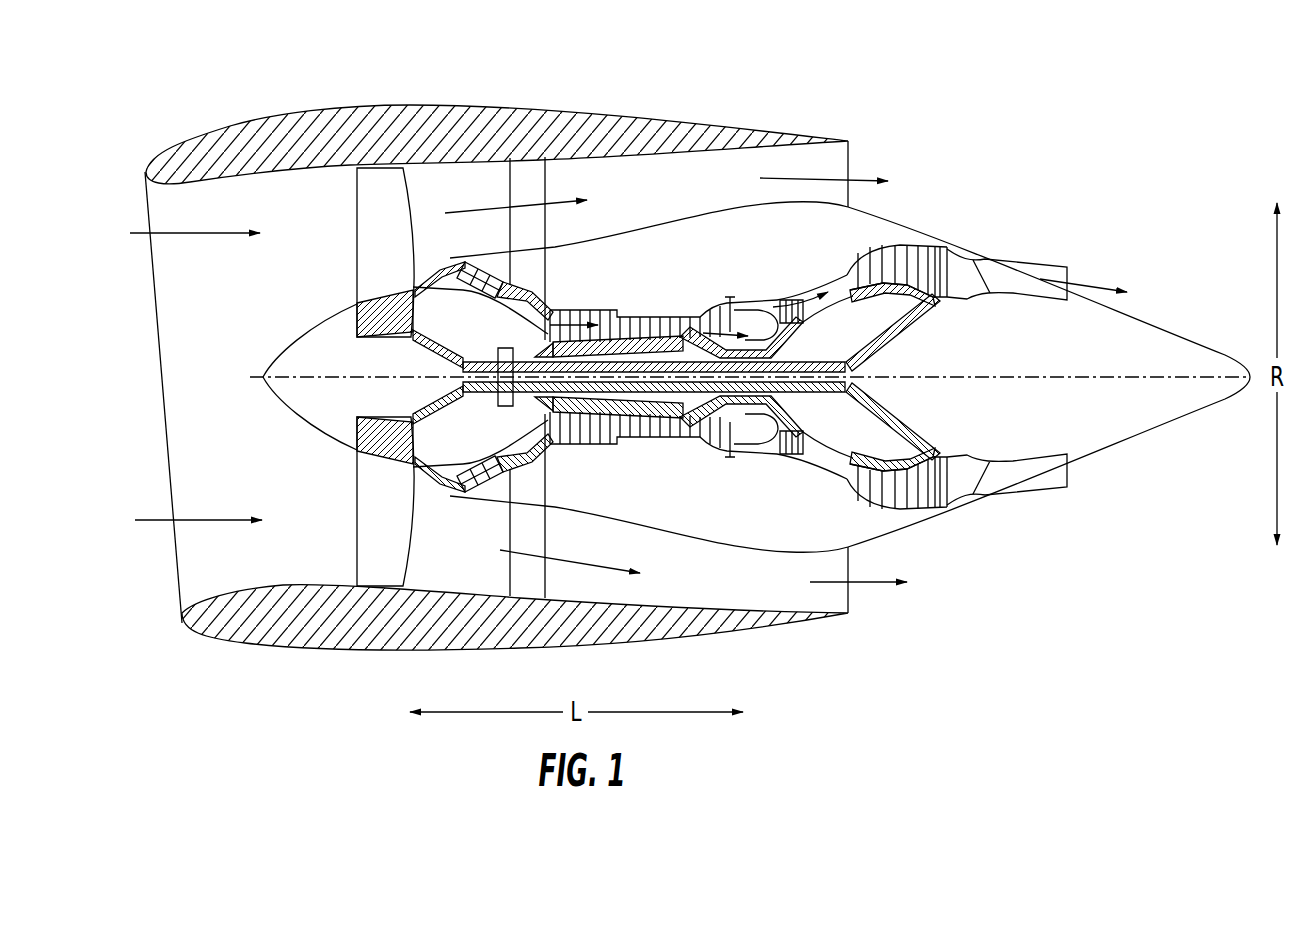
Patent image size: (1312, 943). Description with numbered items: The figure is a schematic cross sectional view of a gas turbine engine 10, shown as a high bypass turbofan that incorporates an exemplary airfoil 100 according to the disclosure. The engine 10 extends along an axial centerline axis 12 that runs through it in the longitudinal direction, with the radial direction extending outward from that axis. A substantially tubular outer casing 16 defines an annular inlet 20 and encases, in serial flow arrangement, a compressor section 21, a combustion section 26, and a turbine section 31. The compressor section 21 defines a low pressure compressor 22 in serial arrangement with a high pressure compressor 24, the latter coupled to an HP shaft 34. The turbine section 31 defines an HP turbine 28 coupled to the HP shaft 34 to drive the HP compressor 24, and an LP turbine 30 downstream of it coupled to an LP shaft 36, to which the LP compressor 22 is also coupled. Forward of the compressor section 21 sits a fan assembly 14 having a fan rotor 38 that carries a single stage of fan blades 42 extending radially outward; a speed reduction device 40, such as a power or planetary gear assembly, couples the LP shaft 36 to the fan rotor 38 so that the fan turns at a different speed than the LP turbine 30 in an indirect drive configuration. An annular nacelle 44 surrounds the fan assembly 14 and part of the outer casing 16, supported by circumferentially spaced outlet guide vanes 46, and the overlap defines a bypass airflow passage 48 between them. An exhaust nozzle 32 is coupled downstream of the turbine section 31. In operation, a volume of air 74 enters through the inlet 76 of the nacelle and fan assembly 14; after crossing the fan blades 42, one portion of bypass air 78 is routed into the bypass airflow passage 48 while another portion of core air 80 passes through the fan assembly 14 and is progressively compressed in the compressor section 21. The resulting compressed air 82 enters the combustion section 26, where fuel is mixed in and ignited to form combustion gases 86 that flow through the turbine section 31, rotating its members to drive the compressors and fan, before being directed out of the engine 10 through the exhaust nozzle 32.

The gas turbine engine 10 is at (988, 126).
The axial centerline axis 12 is at (1015, 376).
The fan assembly 14 is at (433, 178).
The outer casing 16 is at (740, 205).
The annular inlet 20 is at (447, 485).
The compressor section 21 is at (608, 284).
The low pressure compressor 22 is at (507, 452).
The high pressure compressor 24 is at (578, 435).
The combustion section 26 is at (750, 432).
The HP turbine 28 is at (807, 448).
The LP turbine 30 is at (932, 516).
The turbine section 31 is at (886, 240).
The exhaust nozzle 32 is at (997, 490).
The HP shaft 34 is at (790, 343).
The LP shaft 36 is at (890, 313).
The fan rotor 38 is at (410, 340).
The speed reduction device 40 is at (503, 345).
The fan blades 42 is at (375, 205).
The nacelle 44 is at (360, 106).
The outlet guide vanes 46 is at (533, 190).
The bypass airflow passage 48 is at (648, 199).
The air 74 is at (180, 235).
The inlet 76 is at (245, 540).
The bypass air 78 is at (497, 203).
The core air 80 is at (447, 262).
The compressed air 82 is at (550, 303).
The combustion gases 86 is at (877, 258).
The airfoil 100 is at (345, 262).